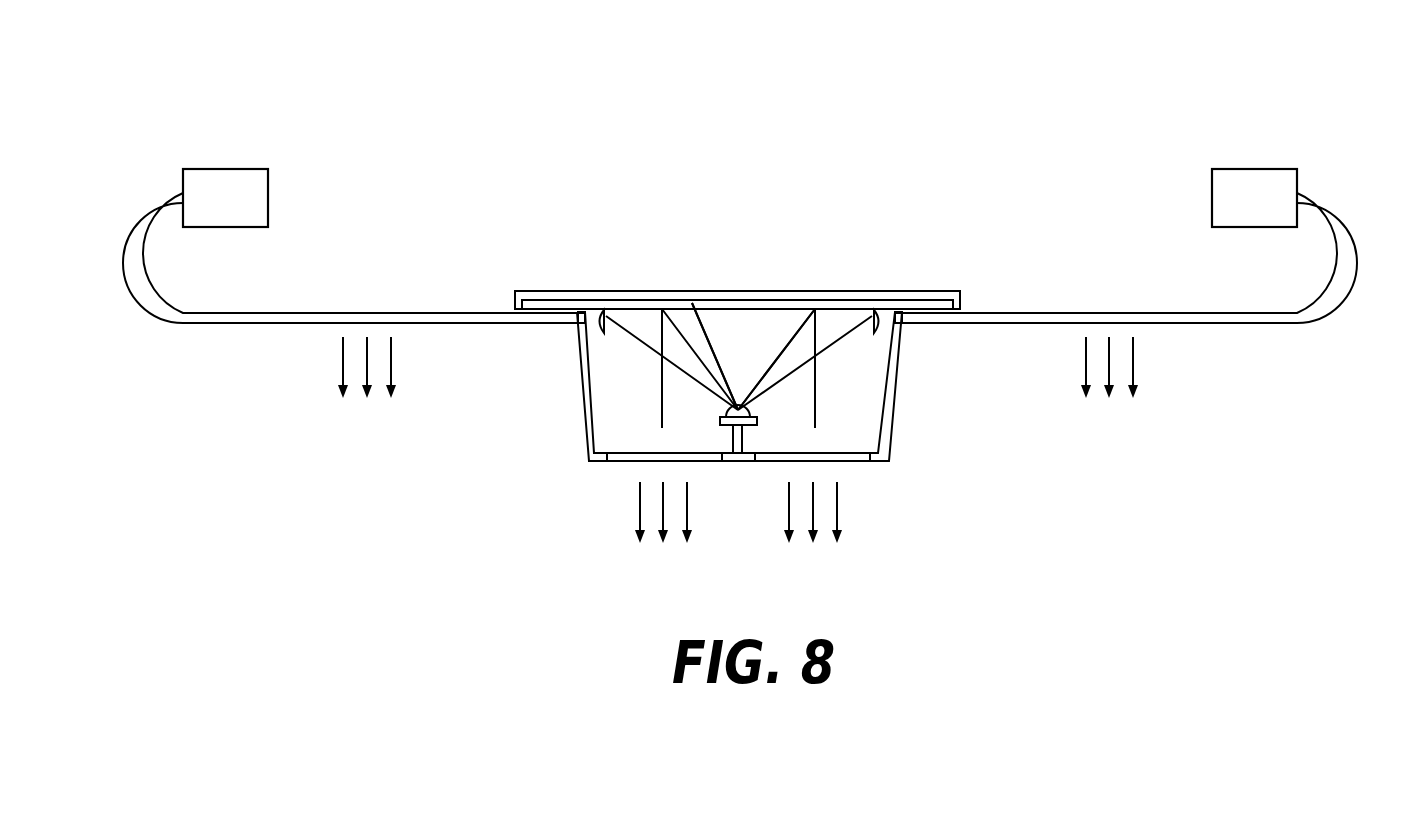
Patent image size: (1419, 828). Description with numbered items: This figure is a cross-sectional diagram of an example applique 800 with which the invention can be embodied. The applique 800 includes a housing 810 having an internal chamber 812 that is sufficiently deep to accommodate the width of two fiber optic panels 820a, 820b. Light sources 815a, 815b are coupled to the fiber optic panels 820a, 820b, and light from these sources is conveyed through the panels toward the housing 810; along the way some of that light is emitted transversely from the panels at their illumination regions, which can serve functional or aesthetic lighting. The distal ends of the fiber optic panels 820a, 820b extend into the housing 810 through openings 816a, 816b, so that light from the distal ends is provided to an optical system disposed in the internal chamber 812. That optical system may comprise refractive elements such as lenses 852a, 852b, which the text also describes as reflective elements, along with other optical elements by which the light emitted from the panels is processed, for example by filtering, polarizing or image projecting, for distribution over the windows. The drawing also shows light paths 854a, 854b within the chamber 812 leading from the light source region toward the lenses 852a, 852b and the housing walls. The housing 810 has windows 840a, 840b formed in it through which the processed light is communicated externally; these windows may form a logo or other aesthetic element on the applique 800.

The applique 800 is at (410, 106).
The housing 810 is at (578, 405).
The internal chamber 812 is at (862, 417).
The light source 815a is at (260, 168).
The light source 815b is at (1298, 182).
The opening 816a is at (572, 322).
The opening 816b is at (905, 327).
The fiber optic panel 820a is at (425, 313).
The fiber optic panel 820b is at (1122, 313).
The window 840a is at (628, 462).
The window 840b is at (850, 462).
The lens 852a is at (600, 332).
The lens 852b is at (876, 331).
The first light ray 854a is at (762, 310).
The second light ray 854b is at (692, 303).